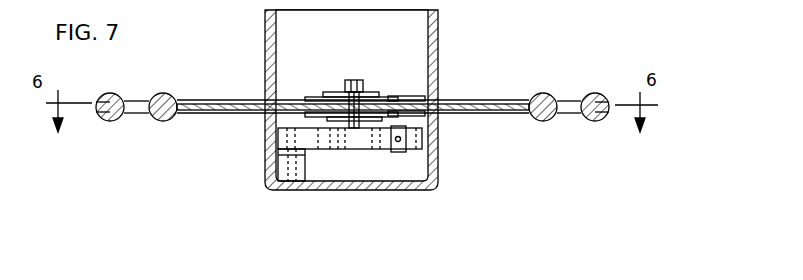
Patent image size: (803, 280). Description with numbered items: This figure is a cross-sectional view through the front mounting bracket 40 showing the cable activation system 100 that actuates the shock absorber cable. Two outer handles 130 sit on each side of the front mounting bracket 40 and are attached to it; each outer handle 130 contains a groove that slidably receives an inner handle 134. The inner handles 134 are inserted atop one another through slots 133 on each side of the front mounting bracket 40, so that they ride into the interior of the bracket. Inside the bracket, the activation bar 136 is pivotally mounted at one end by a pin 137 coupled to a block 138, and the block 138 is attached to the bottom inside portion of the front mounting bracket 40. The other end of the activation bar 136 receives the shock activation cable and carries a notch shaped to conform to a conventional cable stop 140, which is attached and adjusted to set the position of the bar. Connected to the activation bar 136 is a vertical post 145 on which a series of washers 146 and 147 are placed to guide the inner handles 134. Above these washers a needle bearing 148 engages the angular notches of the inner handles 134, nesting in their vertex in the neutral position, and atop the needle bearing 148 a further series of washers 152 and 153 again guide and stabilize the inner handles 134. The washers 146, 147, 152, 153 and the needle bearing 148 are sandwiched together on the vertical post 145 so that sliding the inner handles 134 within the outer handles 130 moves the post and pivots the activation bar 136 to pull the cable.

The front mounting bracket 40 is at (440, 186).
The cable activation system 100 is at (318, 72).
The outer handles 130 is at (112, 122).
The slots 133 is at (264, 118).
The inner handles 134 is at (164, 122).
The activation bar 136 is at (332, 142).
The pin 137 is at (286, 154).
The block 138 is at (301, 166).
The cable stop 140 is at (402, 152).
The vertical post 145 is at (353, 78).
The washer 146 is at (405, 119).
The washer 147 is at (405, 116).
The needle bearing 148 is at (368, 107).
The washer 152 is at (305, 97).
The washer 153 is at (322, 90).